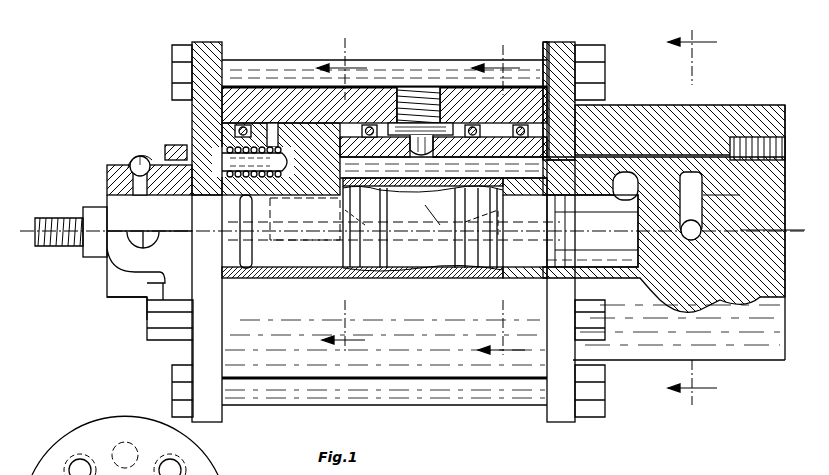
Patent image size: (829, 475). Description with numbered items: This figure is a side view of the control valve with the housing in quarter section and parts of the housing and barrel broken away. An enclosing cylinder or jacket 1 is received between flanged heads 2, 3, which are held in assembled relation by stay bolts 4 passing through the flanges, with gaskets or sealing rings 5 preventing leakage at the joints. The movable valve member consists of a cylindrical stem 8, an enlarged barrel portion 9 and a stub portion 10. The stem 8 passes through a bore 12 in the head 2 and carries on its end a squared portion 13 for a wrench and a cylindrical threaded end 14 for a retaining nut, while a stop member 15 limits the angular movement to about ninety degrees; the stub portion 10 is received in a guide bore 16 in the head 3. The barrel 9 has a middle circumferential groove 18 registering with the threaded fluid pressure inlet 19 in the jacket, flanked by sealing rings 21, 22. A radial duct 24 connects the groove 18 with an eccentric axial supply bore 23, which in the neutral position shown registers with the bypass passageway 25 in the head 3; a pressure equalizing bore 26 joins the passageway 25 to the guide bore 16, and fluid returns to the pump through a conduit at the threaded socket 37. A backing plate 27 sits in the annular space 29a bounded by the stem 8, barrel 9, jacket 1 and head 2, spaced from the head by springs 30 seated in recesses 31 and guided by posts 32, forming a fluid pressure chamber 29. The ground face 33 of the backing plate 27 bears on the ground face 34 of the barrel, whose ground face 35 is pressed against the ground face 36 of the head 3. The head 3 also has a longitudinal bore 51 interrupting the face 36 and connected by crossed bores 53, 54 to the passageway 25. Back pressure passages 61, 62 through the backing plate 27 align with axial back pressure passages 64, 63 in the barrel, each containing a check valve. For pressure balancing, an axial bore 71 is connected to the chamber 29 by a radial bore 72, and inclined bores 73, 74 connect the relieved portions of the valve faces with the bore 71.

The enclosing cylinder or jacket 1 is at (545, 90).
The flanged head 2 is at (190, 78).
The flanged head 3 is at (658, 78).
The stay bolts 4 is at (540, 404).
The gaskets or sealing rings 5 is at (205, 127).
The cylindrical stem 8 is at (213, 217).
The enlarged or barrel portion 9 is at (427, 263).
The stub portion 10 is at (553, 232).
The bore 12 is at (198, 197).
The squared portion 13 is at (95, 258).
The cylindrical threaded end 14 is at (58, 246).
The stop member 15 is at (118, 298).
The guide bore 16 is at (632, 268).
The middle circumferential groove 18 is at (392, 140).
The threaded fluid pressure inlet or opening 19 is at (430, 125).
The sealing ring 21 is at (418, 110).
The sealing ring 22 is at (472, 120).
The supply bore or distribution passage 23 is at (125, 455).
The radial bore or duct 24 is at (433, 150).
The bypass bore or passageway 25 is at (655, 150).
The pressure equalizing bore 26 is at (622, 200).
The backing plate 27 is at (292, 150).
The fluid pressure chamber 29 is at (272, 150).
The annular space 29a is at (288, 150).
The springs 30 is at (250, 100).
The recesses 31 is at (190, 142).
The posts 32 is at (175, 160).
The ground face 33 is at (370, 120).
The ground face 34 is at (344, 183).
The ground face 35 is at (521, 120).
The ground face 36 is at (495, 150).
The threaded socket 37 is at (740, 140).
The longitudinal bore 51 is at (545, 280).
The crossed bore or passage 53 is at (688, 240).
The crossed bore or passage 54 is at (750, 200).
The back pressure passage 61 is at (186, 470).
The back pressure passage 62 is at (68, 458).
The back pressure passage 63 is at (90, 455).
The back pressure passage 64 is at (178, 458).
The axial bore or passageway 71 is at (310, 222).
The radial bore 72 is at (290, 231).
The inclined or radial bore 73 is at (480, 216).
The inclined or radial bore 74 is at (370, 222).